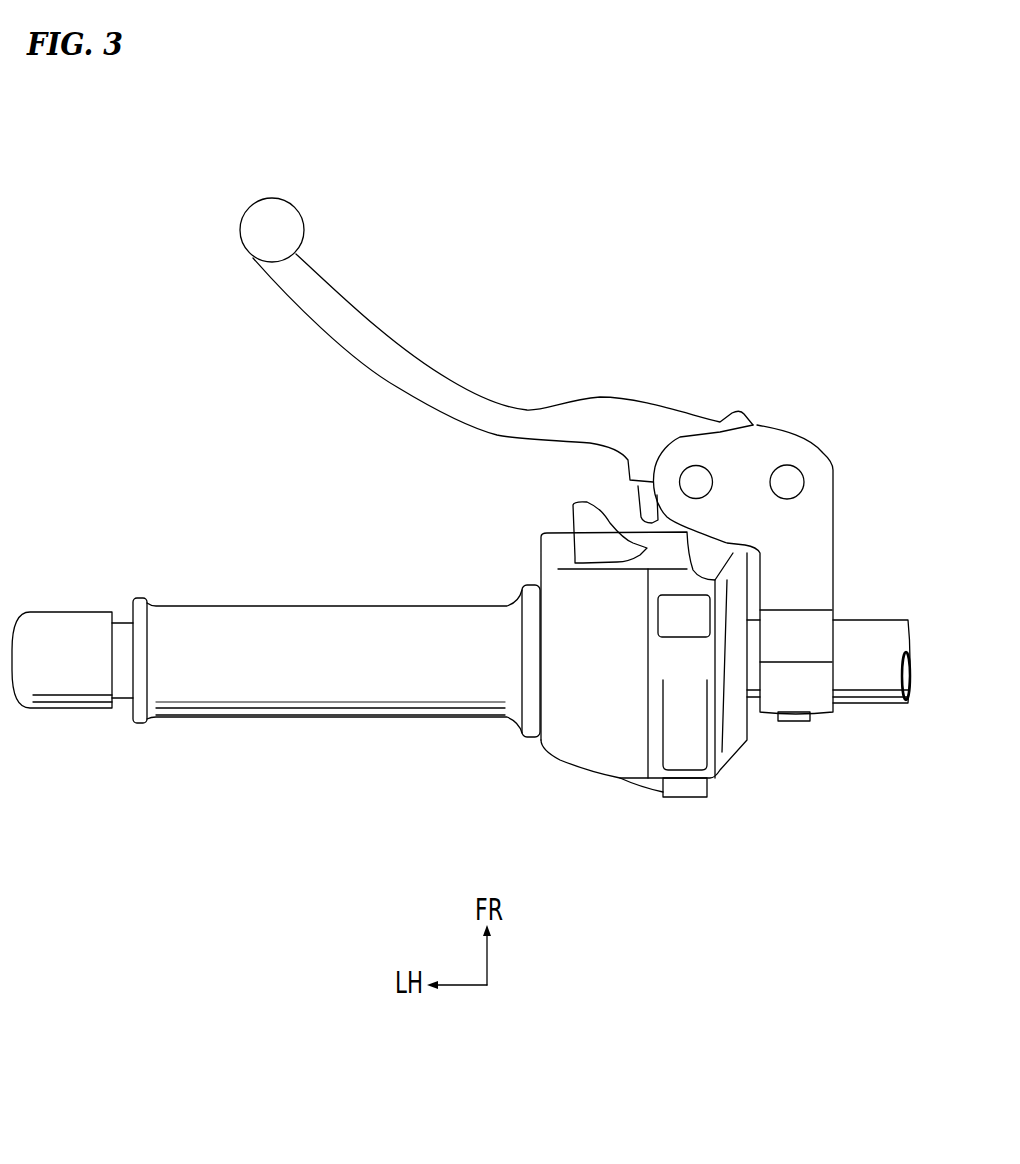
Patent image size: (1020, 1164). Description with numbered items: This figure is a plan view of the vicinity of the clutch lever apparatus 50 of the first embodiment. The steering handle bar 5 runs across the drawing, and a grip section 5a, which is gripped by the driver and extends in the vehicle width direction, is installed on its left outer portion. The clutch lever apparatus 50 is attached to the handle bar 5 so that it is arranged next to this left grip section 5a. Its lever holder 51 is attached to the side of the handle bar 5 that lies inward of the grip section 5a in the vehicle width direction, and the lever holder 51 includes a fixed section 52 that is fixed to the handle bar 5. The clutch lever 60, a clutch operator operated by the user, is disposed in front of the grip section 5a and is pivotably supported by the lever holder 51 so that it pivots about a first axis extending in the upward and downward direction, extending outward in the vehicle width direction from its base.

The steering handle bar 5 is at (868, 683).
The grip section 5a is at (275, 712).
The clutch lever apparatus 50 is at (786, 542).
The lever holder 51 is at (841, 555).
The fixed section 52 is at (795, 703).
The clutch lever 60 is at (387, 350).